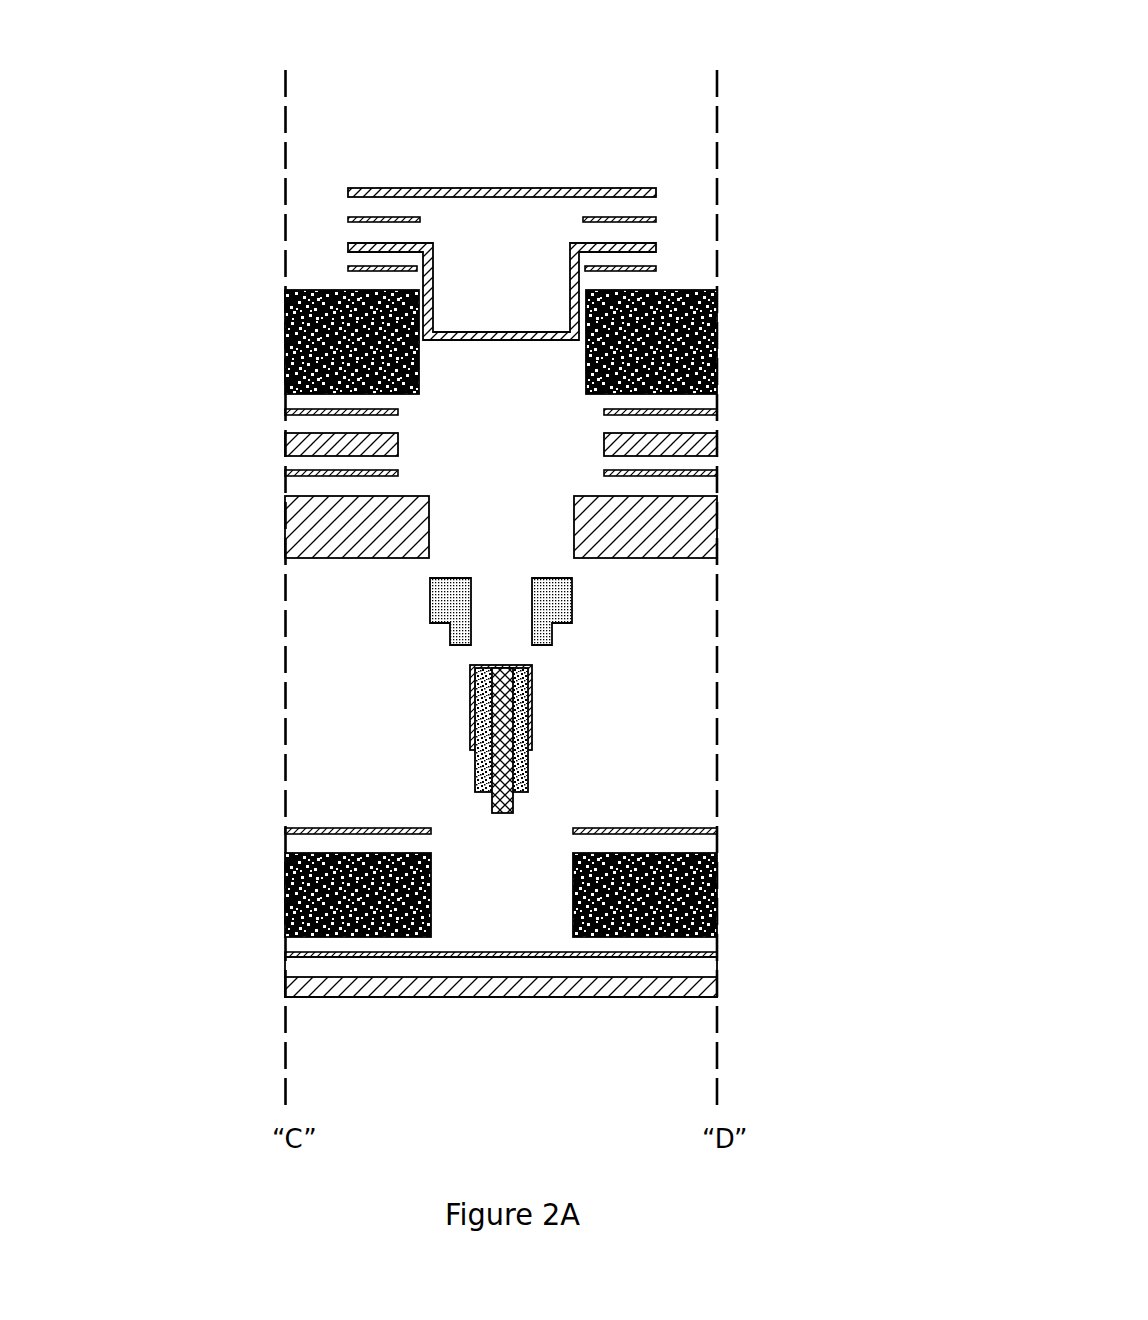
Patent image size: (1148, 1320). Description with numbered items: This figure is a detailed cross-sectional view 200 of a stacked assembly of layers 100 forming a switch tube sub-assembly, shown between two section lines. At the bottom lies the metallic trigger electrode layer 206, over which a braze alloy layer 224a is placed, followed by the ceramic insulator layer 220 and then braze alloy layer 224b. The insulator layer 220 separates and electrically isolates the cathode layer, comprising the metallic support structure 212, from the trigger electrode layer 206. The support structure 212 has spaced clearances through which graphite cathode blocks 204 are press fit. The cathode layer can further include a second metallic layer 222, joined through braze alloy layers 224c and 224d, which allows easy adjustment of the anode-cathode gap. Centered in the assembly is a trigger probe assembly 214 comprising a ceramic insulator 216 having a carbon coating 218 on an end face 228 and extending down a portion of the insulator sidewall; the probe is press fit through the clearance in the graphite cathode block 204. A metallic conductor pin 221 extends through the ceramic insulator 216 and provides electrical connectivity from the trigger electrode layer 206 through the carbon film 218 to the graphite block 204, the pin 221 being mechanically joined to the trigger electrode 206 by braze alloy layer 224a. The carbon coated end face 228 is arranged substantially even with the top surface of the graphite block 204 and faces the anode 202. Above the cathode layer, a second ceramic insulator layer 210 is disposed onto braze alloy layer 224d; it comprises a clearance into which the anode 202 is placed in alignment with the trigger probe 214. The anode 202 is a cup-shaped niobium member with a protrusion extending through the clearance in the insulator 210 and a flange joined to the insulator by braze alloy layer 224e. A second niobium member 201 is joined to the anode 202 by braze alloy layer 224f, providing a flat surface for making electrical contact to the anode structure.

The device assembly 100 is at (502, 103).
The cross-sectional view 200 is at (836, 24).
The second niobium member 201 is at (663, 192).
The anode 202 is at (663, 245).
The graphite cathode block 204 is at (417, 605).
The trigger electrode layer 206 is at (728, 987).
The second ceramic insulator layer 210 is at (728, 332).
The metallic support structure 212 is at (728, 520).
The trigger probe assembly 214 is at (645, 700).
The ceramic insulator 216 is at (472, 772).
The carbon coating 218 is at (465, 687).
The ceramic insulator layer 220 is at (728, 892).
The metallic conductor pin 221 is at (487, 807).
The second metallic layer 222 is at (728, 438).
The braze alloy layer 224a is at (275, 952).
The braze alloy layer 224b is at (275, 830).
The braze alloy layer 224c is at (275, 472).
The braze alloy layer 224d is at (275, 408).
The braze alloy layer 224e is at (335, 267).
The braze alloy layer 224f is at (335, 218).
The end face 228 is at (493, 646).